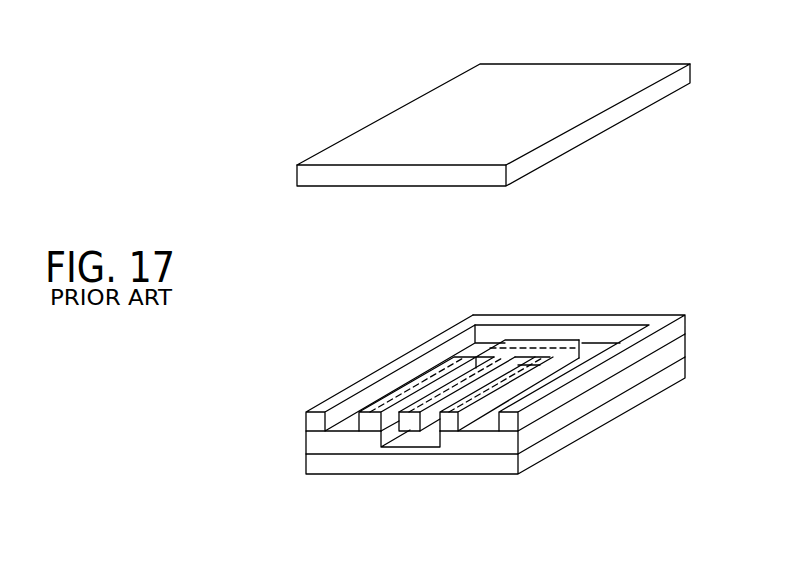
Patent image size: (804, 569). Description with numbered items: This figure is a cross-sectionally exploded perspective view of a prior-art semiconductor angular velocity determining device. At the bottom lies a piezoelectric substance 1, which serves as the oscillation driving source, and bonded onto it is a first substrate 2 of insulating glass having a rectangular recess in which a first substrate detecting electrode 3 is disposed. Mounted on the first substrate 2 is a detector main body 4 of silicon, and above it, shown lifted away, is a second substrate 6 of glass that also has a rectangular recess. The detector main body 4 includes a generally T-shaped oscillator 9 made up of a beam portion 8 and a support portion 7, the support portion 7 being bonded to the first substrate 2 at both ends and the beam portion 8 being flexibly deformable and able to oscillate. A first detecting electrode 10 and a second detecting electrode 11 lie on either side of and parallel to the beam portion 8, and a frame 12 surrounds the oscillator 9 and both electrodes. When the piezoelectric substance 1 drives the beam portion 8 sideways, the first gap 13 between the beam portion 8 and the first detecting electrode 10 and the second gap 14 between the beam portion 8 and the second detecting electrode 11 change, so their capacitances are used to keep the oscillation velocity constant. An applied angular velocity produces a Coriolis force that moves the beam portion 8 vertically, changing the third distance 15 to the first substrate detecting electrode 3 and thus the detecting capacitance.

The piezoelectric substance 1 is at (312, 467).
The first substrate 2 is at (307, 447).
The first substrate detecting electrode 3 is at (422, 438).
The detector main body 4 is at (307, 426).
The second substrate 6 is at (432, 112).
The support portion 7 is at (548, 340).
The beam portion 8 is at (441, 389).
The oscillator 9 is at (505, 343).
The first detecting electrode 10 is at (388, 400).
The second detecting electrode 11 is at (522, 370).
The frame 12 is at (663, 317).
The first gap 13 is at (381, 432).
The second gap 14 is at (487, 423).
The third distance 15 is at (403, 432).